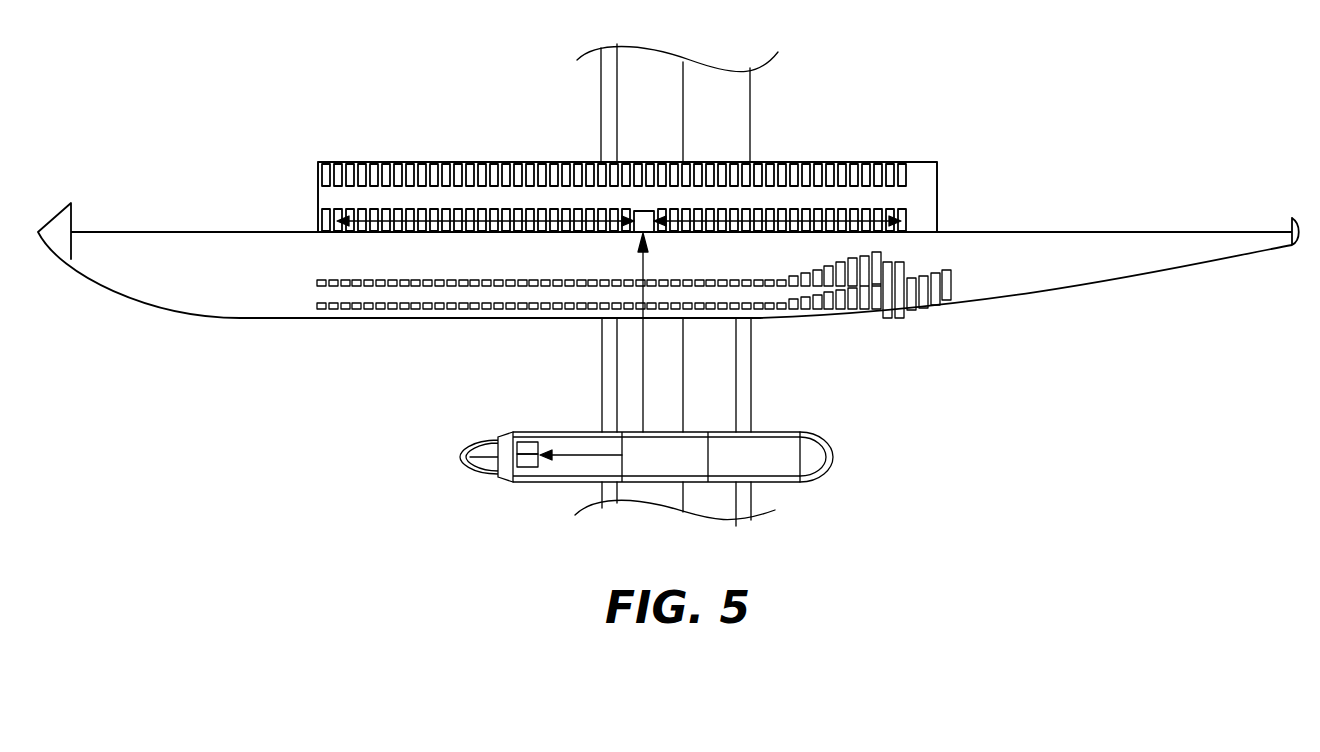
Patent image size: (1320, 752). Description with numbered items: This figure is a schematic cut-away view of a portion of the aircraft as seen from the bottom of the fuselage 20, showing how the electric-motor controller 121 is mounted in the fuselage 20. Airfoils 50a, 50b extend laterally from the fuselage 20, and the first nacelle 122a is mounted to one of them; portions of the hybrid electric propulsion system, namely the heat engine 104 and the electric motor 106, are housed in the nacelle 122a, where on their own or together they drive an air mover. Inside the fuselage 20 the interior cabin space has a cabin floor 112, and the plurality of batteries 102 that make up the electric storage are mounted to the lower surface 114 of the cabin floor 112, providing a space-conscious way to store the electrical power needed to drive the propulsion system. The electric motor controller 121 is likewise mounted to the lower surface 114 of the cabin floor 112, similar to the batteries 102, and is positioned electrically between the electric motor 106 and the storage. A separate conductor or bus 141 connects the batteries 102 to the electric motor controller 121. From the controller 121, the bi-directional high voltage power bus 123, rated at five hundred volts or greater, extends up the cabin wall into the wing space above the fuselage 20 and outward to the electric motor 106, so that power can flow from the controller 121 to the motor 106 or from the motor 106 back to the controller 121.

The fuselage 20 is at (1070, 290).
The batteries 102 is at (900, 172).
The lower surface 114 is at (928, 198).
The cabin floor 112 is at (318, 197).
The conductor or bus 141 is at (476, 213).
The electric motor controller 121 is at (646, 210).
The airfoil 50b is at (630, 118).
The airfoil 50a is at (613, 357).
The high voltage power bus 123 is at (643, 370).
The first nacelle 122a is at (803, 478).
The electric motor 106 is at (530, 443).
The heat engine 104 is at (538, 483).